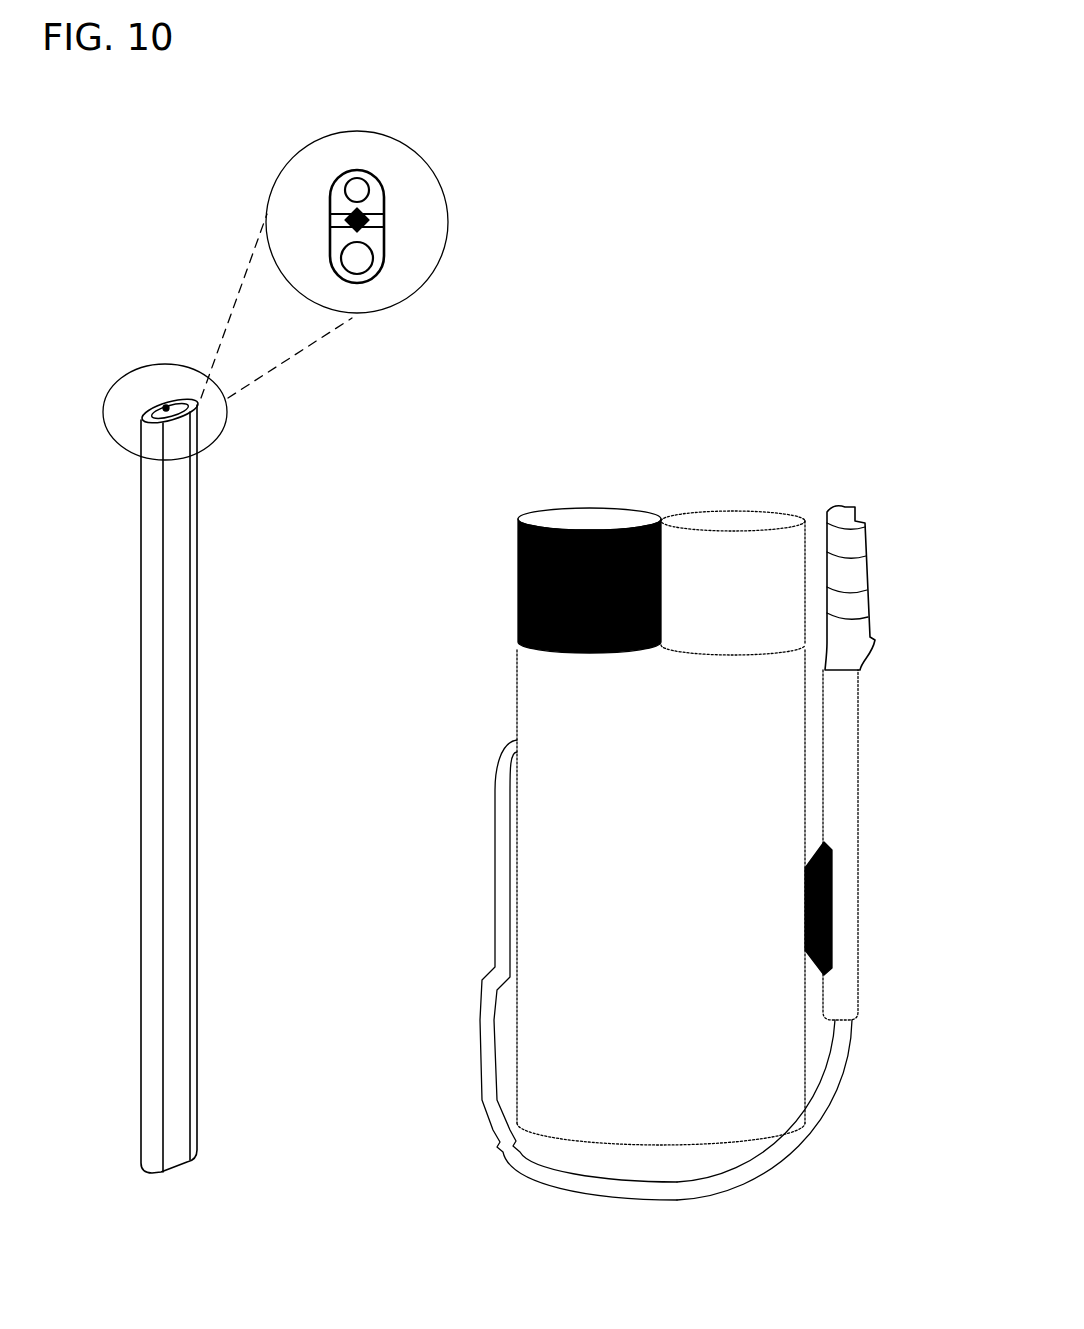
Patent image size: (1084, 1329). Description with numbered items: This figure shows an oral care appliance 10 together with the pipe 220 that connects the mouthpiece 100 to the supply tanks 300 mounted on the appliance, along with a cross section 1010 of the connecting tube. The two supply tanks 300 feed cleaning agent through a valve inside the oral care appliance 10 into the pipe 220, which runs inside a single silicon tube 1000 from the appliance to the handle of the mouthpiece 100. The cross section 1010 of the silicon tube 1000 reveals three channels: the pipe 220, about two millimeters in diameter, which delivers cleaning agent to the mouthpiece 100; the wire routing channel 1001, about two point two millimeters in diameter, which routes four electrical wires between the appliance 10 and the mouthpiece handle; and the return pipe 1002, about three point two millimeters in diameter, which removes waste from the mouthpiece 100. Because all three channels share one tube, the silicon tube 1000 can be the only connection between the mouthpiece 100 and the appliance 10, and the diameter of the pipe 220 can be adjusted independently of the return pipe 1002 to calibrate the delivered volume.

The oral care appliance 10 is at (689, 799).
The mouthpiece 100 is at (868, 572).
The pipe 220 is at (360, 184).
The supply tank 300 is at (563, 520).
The silicon tube 1000 is at (173, 967).
The wire routing channel 1001 is at (370, 207).
The return pipe 1002 is at (358, 262).
The cross section 1010 is at (167, 308).